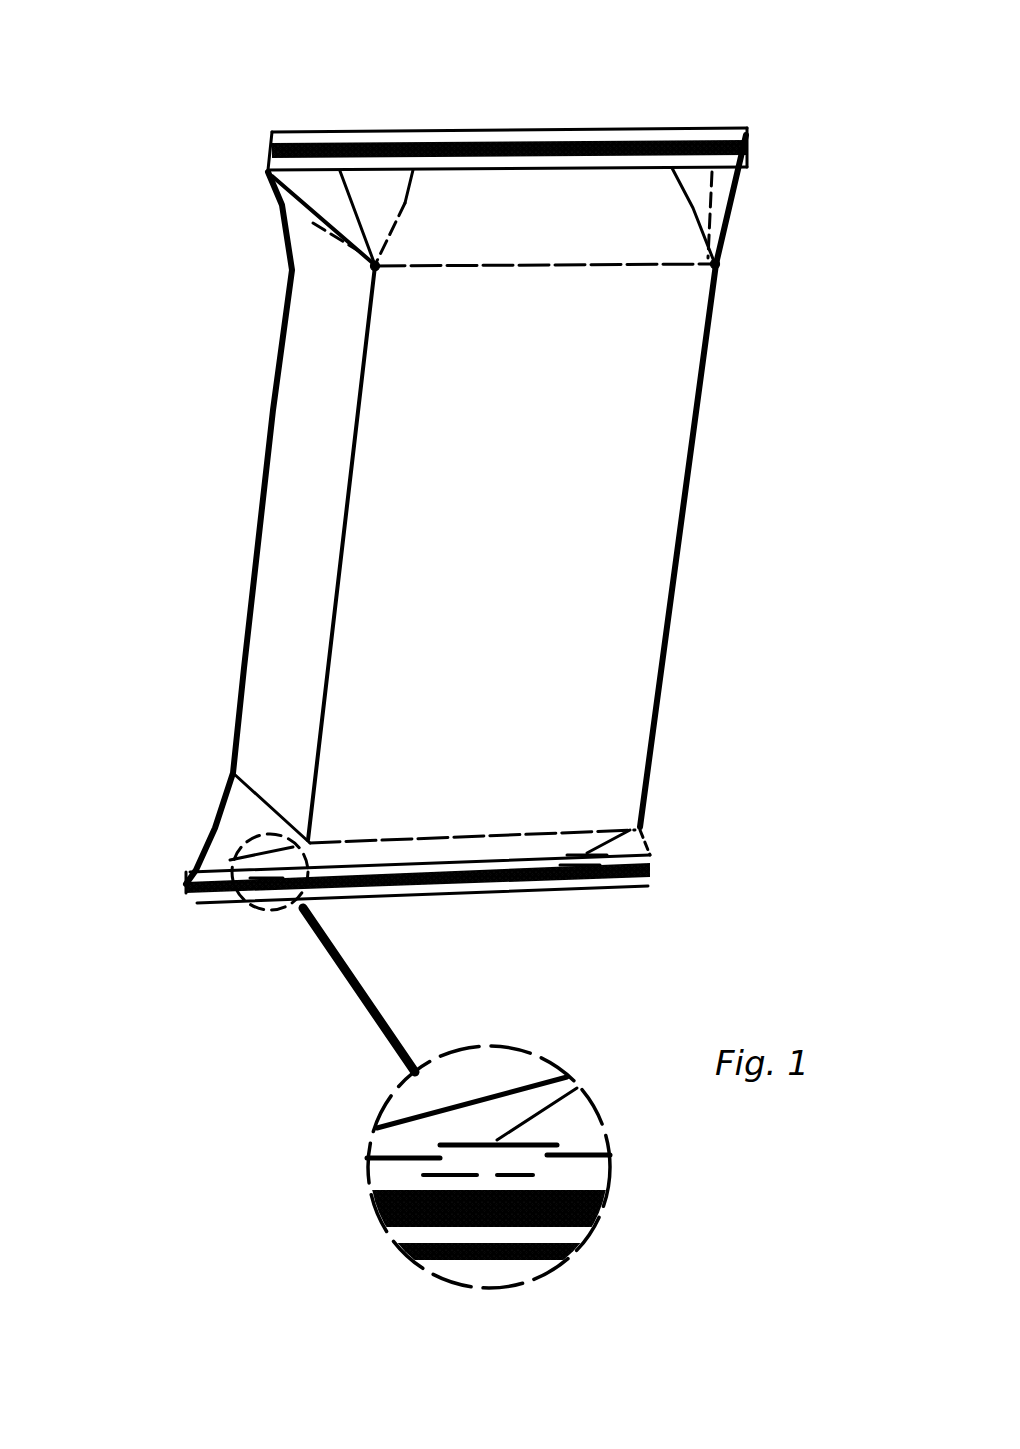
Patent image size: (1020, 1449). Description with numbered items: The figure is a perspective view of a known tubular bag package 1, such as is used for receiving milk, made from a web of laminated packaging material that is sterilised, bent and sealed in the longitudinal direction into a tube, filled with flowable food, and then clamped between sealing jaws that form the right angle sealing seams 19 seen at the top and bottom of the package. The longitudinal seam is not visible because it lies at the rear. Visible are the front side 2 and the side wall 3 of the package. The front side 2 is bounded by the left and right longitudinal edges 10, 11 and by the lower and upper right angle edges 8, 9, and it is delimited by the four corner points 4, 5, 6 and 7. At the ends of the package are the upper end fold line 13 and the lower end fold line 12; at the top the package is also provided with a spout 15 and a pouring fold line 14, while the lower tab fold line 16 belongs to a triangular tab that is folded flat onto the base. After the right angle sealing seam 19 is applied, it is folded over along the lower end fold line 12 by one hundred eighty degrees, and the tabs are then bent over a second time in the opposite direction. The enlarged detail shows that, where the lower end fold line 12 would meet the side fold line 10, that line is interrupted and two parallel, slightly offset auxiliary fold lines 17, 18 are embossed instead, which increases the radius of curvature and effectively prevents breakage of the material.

The tubular bag package 1 is at (133, 960).
The front side 2 is at (376, 568).
The side wall 3 is at (297, 380).
The left lower corner point 4 is at (310, 843).
The right lower corner point 5 is at (640, 827).
The left upper corner point 6 is at (375, 266).
The right upper corner point 7 is at (715, 264).
The lower right angle edge 8 is at (367, 840).
The upper right angle edge 9 is at (628, 266).
The left longitudinal edge 10 is at (328, 641).
The right longitudinal edge 11 is at (693, 208).
The lower end fold line 12 is at (650, 855).
The upper end fold line 13 is at (705, 169).
The pouring fold line 14 is at (405, 203).
The spout 15 is at (315, 215).
The lower tab fold line 16 is at (437, 1110).
The upper auxiliary fold line 17 is at (485, 1175).
The lower auxiliary fold line 18 is at (537, 1147).
The right angle sealing seam 19 is at (545, 143).